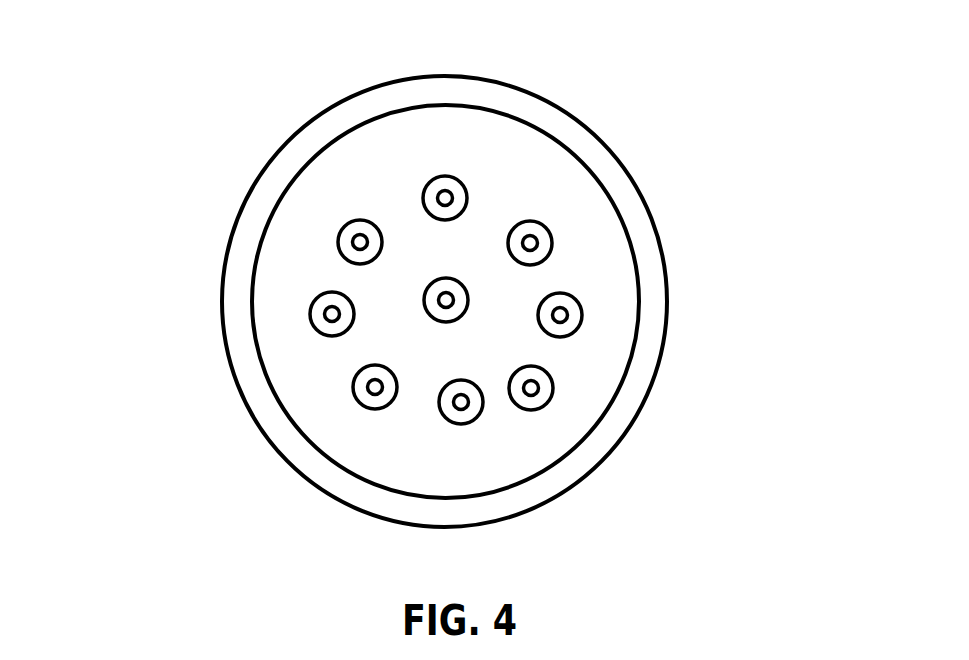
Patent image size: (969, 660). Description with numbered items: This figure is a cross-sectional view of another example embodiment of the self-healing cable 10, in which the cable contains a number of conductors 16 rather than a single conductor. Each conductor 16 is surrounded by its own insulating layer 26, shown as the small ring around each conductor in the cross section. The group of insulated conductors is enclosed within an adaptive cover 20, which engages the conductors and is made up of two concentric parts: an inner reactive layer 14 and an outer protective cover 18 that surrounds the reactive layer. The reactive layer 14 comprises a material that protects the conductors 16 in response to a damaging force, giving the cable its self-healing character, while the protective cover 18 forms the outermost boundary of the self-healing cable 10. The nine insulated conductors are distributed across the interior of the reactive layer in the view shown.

The self-healing cable 10 is at (213, 60).
The reactive layer 14 is at (567, 222).
The conductor 16 is at (567, 308).
The protective cover 18 is at (580, 150).
The adaptive cover 20 is at (783, 77).
The insulating layer 26 is at (583, 323).